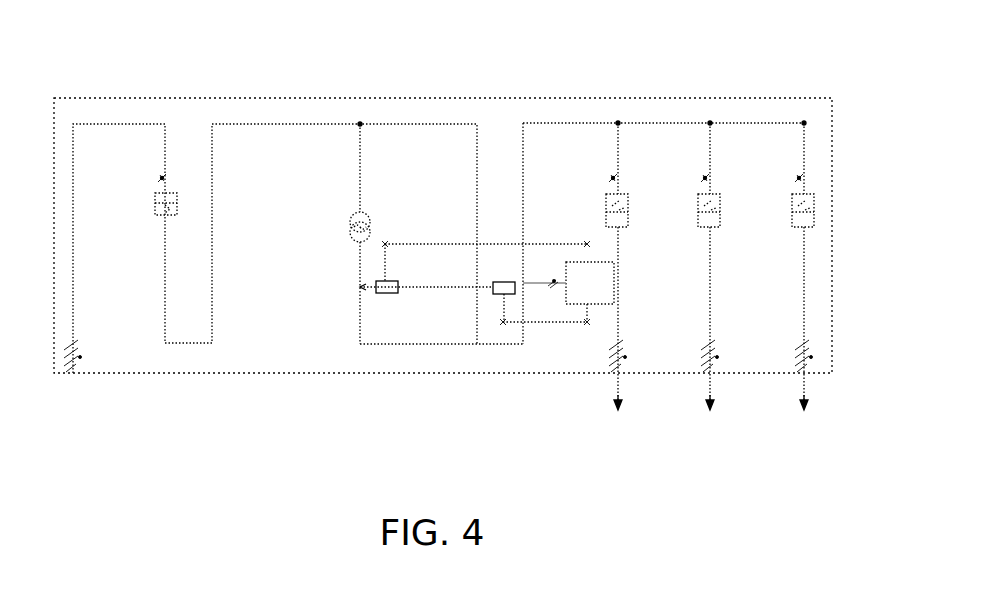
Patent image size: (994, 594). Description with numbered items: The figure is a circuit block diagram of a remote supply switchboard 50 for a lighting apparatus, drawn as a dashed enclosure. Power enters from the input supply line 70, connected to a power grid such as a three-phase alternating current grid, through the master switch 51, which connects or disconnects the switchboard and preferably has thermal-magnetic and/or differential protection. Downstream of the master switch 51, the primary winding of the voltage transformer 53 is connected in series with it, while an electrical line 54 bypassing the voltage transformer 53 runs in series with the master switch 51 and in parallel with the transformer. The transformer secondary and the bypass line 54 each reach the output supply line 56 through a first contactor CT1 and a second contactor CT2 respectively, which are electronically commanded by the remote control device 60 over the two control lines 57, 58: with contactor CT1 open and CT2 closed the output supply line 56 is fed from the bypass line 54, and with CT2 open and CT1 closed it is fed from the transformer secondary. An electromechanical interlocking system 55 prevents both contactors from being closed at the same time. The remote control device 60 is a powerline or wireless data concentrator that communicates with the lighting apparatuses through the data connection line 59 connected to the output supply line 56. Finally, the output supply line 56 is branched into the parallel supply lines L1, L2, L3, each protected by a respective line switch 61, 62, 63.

The remote supply switchboard 50 is at (277, 98).
The master switch 51 is at (163, 188).
The voltage transformer 53 is at (372, 216).
The electrical line bypassing the voltage transformer 54 is at (465, 124).
The electromechanical interlocking system 55 is at (437, 284).
The output supply line 56 is at (512, 344).
The control line 57 is at (437, 244).
The control line 58 is at (569, 323).
The data connection line 59 is at (530, 278).
The remote control device 60 is at (604, 305).
The line switch 61 is at (612, 207).
The line switch 62 is at (706, 206).
The line switch 63 is at (800, 207).
The input supply line 70 is at (72, 383).
The first contactor CT1 is at (380, 292).
The second contactor CT2 is at (503, 282).
The parallel supply line L1 is at (620, 418).
The parallel supply line L2 is at (713, 418).
The parallel supply line L3 is at (807, 418).